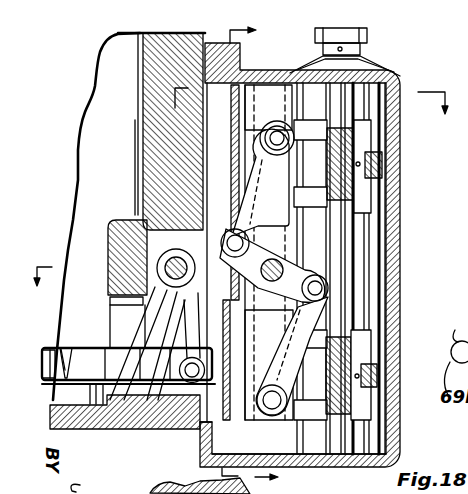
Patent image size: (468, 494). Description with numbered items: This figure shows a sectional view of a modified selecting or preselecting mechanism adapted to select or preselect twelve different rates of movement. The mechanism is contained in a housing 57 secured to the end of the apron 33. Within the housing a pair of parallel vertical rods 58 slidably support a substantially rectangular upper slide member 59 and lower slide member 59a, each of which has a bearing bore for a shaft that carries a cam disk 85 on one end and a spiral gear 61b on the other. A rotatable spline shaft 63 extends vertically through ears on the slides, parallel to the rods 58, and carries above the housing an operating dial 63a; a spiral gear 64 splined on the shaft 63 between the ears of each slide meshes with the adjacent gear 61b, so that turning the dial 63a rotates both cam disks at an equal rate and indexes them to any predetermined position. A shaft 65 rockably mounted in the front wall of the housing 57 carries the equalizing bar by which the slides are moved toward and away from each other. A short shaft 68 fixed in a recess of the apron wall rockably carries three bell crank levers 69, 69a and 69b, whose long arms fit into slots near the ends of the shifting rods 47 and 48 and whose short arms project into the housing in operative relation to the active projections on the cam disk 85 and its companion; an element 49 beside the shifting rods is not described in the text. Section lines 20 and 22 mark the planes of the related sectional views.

The section line 20- 20 is at (262, 258).
The section line 22- 22 is at (237, 200).
The apron 33 is at (100, 90).
The shifting rod 47 is at (42, 358).
The shifting rod 48 is at (63, 354).
The shaft 49 is at (84, 356).
The housing 57 is at (399, 285).
The vertical rods 58 is at (299, 474).
The upper slide member 59 is at (274, 97).
The lower slide member 59a is at (204, 450).
The spiral gear 61b is at (366, 184).
The spline shaft 63 is at (357, 258).
The operating dial 63a is at (378, 57).
The spiral gear 64 is at (383, 170).
The shaft 65 is at (301, 249).
The short shaft 68 is at (127, 219).
The bell crank lever 69 is at (185, 398).
The bell crank lever 69a is at (147, 400).
The third bell crank lever 69b is at (110, 400).
The cam disk 85 is at (231, 156).